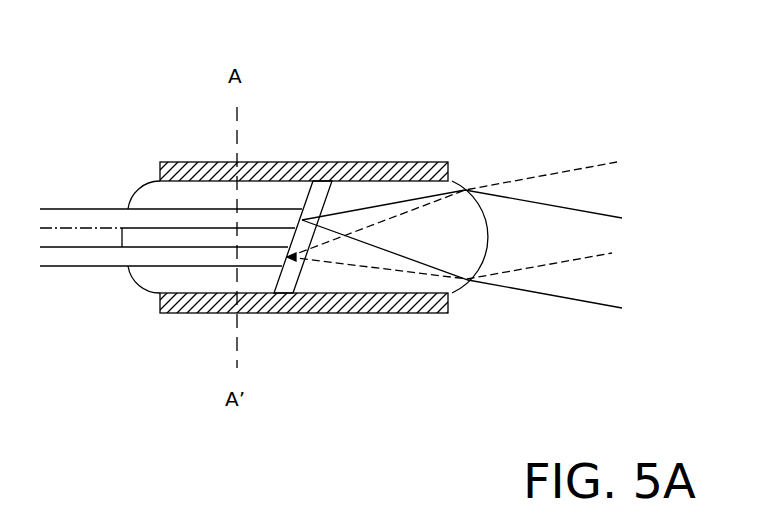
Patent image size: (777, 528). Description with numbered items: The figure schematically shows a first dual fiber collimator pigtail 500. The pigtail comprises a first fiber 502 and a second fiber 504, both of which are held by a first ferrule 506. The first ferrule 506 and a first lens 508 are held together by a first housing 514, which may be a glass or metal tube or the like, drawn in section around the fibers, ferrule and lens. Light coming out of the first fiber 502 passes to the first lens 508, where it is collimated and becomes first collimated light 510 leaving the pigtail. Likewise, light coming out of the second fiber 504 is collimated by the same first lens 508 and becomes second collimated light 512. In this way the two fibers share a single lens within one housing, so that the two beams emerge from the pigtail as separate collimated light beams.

The first dual fiber collimator pigtail 500 is at (132, 77).
The first fiber 502 is at (82, 209).
The second fiber 504 is at (82, 263).
The first ferrule 506 is at (140, 283).
The first lens 508 is at (462, 182).
The first collimated light 510 is at (587, 302).
The second collimated light 512 is at (593, 163).
The first housing 514 is at (305, 162).